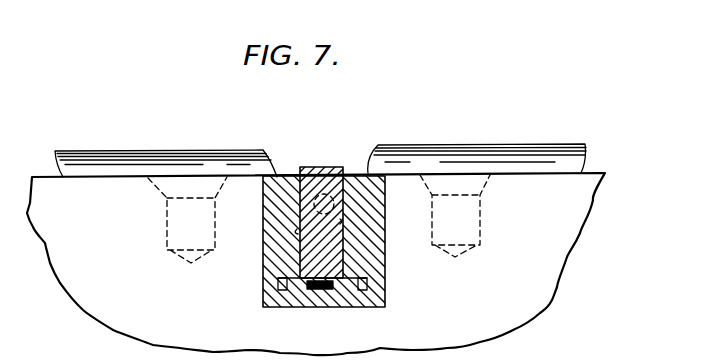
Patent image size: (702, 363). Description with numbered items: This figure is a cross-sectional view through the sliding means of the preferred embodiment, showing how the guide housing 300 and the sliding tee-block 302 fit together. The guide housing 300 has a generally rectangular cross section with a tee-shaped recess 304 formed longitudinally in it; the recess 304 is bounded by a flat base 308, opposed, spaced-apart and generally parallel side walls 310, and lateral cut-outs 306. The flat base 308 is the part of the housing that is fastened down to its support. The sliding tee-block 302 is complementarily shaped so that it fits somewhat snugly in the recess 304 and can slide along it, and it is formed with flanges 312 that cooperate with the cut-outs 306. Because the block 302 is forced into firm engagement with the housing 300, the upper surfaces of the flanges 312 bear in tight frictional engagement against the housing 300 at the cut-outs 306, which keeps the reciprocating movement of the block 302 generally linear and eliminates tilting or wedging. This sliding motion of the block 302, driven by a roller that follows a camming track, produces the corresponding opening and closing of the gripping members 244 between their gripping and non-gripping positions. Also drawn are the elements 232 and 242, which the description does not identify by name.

The substrate 232 is at (533, 293).
The gripping members 244 is at (151, 151).
The via hole 242 is at (167, 221).
The guide housing 300 is at (386, 276).
The sliding tee-block 302 is at (326, 167).
The tee-shaped recess 304 is at (343, 222).
The lateral cut-outs 306 is at (290, 292).
The flat base 308 is at (318, 285).
The side walls 310 is at (345, 192).
The flanges 312 is at (292, 278).